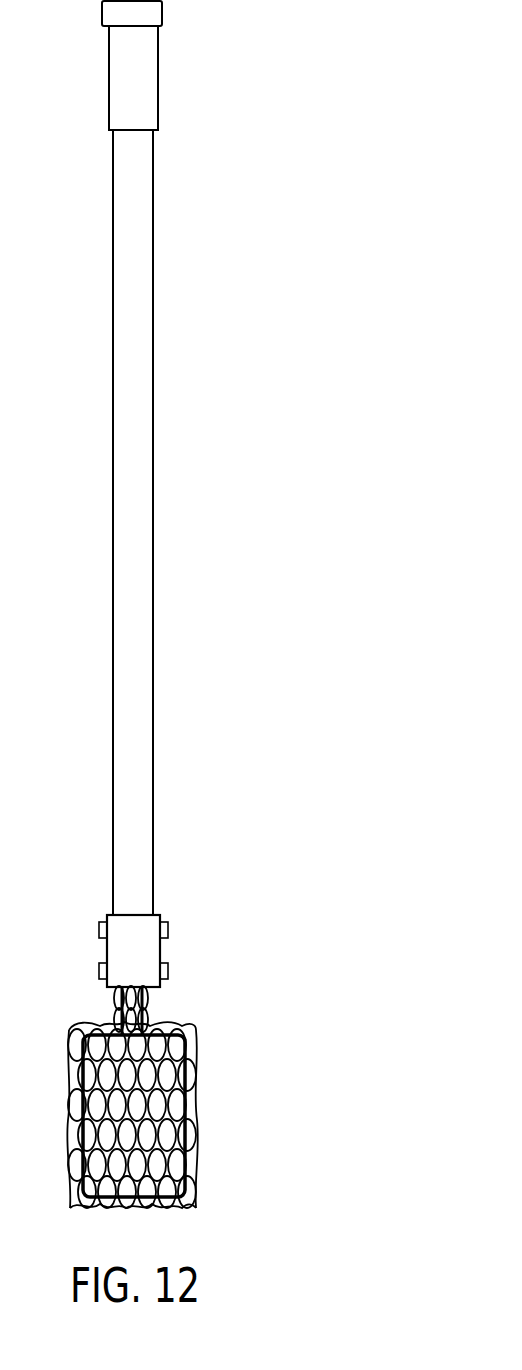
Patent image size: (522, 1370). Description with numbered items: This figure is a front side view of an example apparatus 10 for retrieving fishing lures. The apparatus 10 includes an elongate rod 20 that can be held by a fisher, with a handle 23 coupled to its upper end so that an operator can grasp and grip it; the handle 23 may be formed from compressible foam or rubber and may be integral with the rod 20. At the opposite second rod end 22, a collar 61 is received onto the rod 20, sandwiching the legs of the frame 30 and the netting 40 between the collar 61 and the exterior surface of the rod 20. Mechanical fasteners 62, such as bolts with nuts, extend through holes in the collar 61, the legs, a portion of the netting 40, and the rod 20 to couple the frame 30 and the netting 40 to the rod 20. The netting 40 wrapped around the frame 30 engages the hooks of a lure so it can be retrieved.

The apparatus 10 is at (194, 417).
The rod 20 is at (143, 620).
The second rod end 22 is at (92, 920).
The handle 23 is at (140, 88).
The frame 30 is at (183, 1127).
The netting 40 is at (187, 1200).
The collar 61 is at (153, 917).
The mechanical fasteners 62 is at (168, 930).